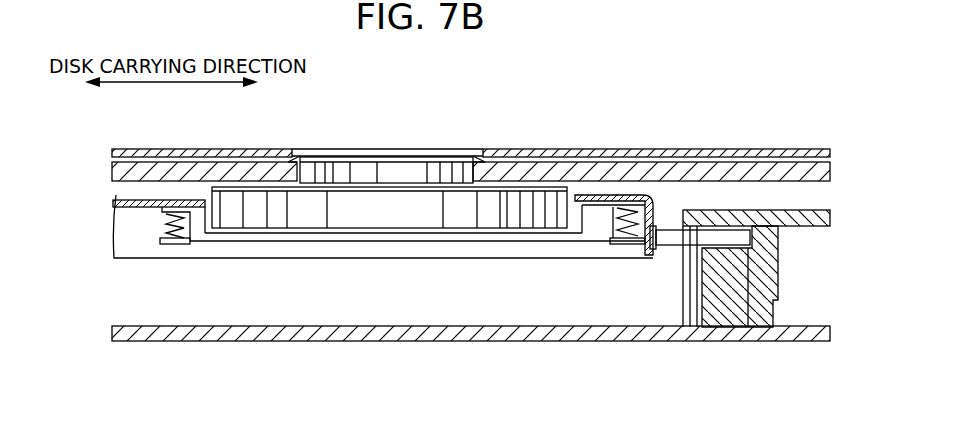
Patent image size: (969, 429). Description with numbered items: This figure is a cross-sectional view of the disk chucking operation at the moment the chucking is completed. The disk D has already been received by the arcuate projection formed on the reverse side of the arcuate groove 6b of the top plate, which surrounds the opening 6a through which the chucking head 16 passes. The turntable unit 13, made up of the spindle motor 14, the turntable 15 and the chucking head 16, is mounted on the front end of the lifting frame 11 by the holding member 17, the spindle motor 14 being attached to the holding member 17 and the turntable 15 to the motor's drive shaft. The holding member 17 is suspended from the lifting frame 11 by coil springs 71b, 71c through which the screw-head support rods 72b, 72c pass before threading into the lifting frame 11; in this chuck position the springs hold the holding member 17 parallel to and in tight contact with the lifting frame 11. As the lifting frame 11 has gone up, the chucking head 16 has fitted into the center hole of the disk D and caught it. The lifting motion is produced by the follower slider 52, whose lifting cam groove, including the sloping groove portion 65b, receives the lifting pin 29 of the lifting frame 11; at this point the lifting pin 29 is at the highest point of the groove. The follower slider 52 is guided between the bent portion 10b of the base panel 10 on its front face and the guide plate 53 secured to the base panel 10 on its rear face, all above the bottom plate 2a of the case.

The disk D is at (581, 149).
The base panel 10 is at (811, 200).
The opening 6a is at (298, 150).
The arcuate groove 6b is at (500, 150).
The turntable 15 is at (433, 183).
The turntable unit 13 is at (392, 149).
The chucking head 16 is at (337, 183).
The lifting frame 11 is at (150, 200).
The spindle motor 14 is at (285, 212).
The holding member 17 is at (381, 238).
The coil spring 71c is at (162, 213).
The support rod 72c is at (175, 244).
The coil spring 71b is at (617, 213).
The support rod 72b is at (627, 244).
The lifting pin 29 is at (670, 230).
The follower slider 52 is at (772, 210).
The bent portion 10b is at (690, 318).
The sloping groove portion 65b is at (770, 256).
The guide plate 53 is at (779, 267).
The bottom plate 2a is at (181, 333).